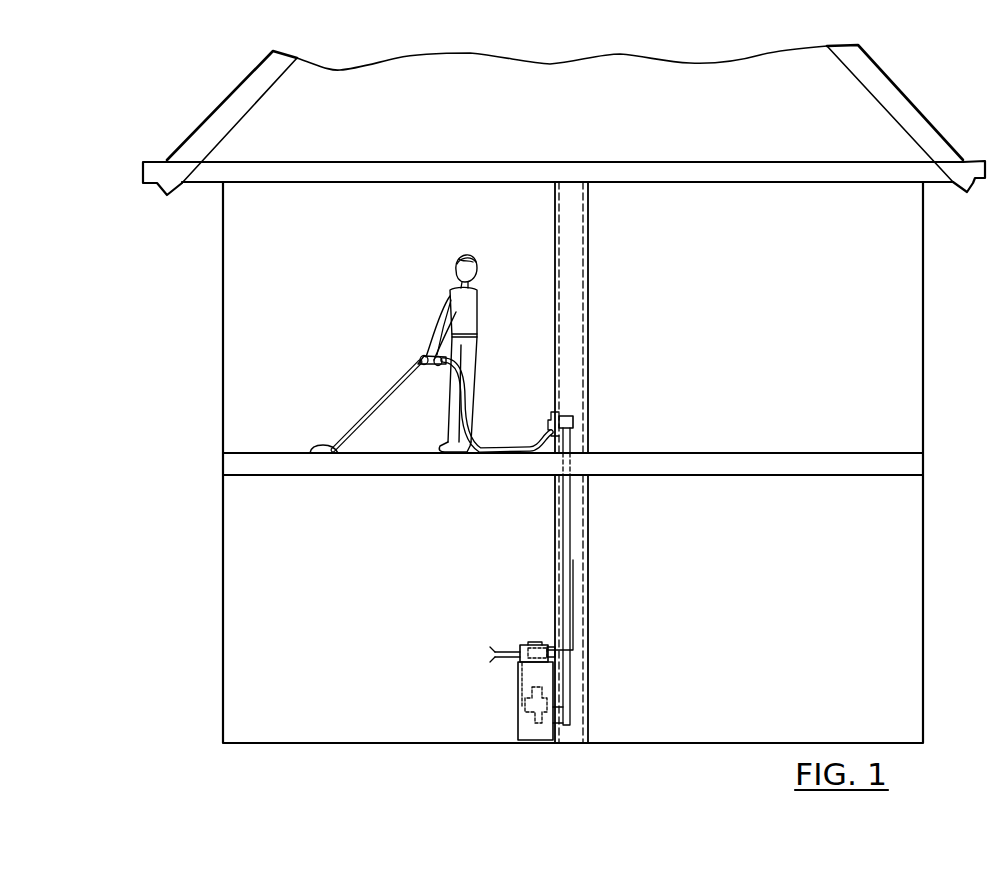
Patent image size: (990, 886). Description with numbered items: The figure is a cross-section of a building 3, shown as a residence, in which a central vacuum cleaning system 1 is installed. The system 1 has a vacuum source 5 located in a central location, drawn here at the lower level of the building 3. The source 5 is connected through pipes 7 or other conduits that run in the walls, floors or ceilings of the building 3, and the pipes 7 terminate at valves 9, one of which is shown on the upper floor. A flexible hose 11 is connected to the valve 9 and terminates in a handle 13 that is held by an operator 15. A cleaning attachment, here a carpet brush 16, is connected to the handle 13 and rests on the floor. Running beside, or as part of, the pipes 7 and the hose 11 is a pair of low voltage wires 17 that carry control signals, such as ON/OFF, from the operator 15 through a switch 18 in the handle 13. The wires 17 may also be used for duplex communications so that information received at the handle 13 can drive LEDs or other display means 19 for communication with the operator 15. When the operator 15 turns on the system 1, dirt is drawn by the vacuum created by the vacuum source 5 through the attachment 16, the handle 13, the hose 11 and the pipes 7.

The central vacuum cleaning system 1 is at (484, 689).
The building 3 is at (222, 300).
The vacuum source 5 is at (529, 638).
The pipes 7 is at (571, 707).
The valves 9 is at (574, 426).
The flexible hose 11 is at (503, 444).
The handle 13 is at (419, 357).
The operator 15 is at (478, 318).
The carpet brush 16 is at (323, 449).
The low voltage wires 17 is at (563, 410).
The switch 18 is at (430, 368).
The display means 19 is at (547, 646).